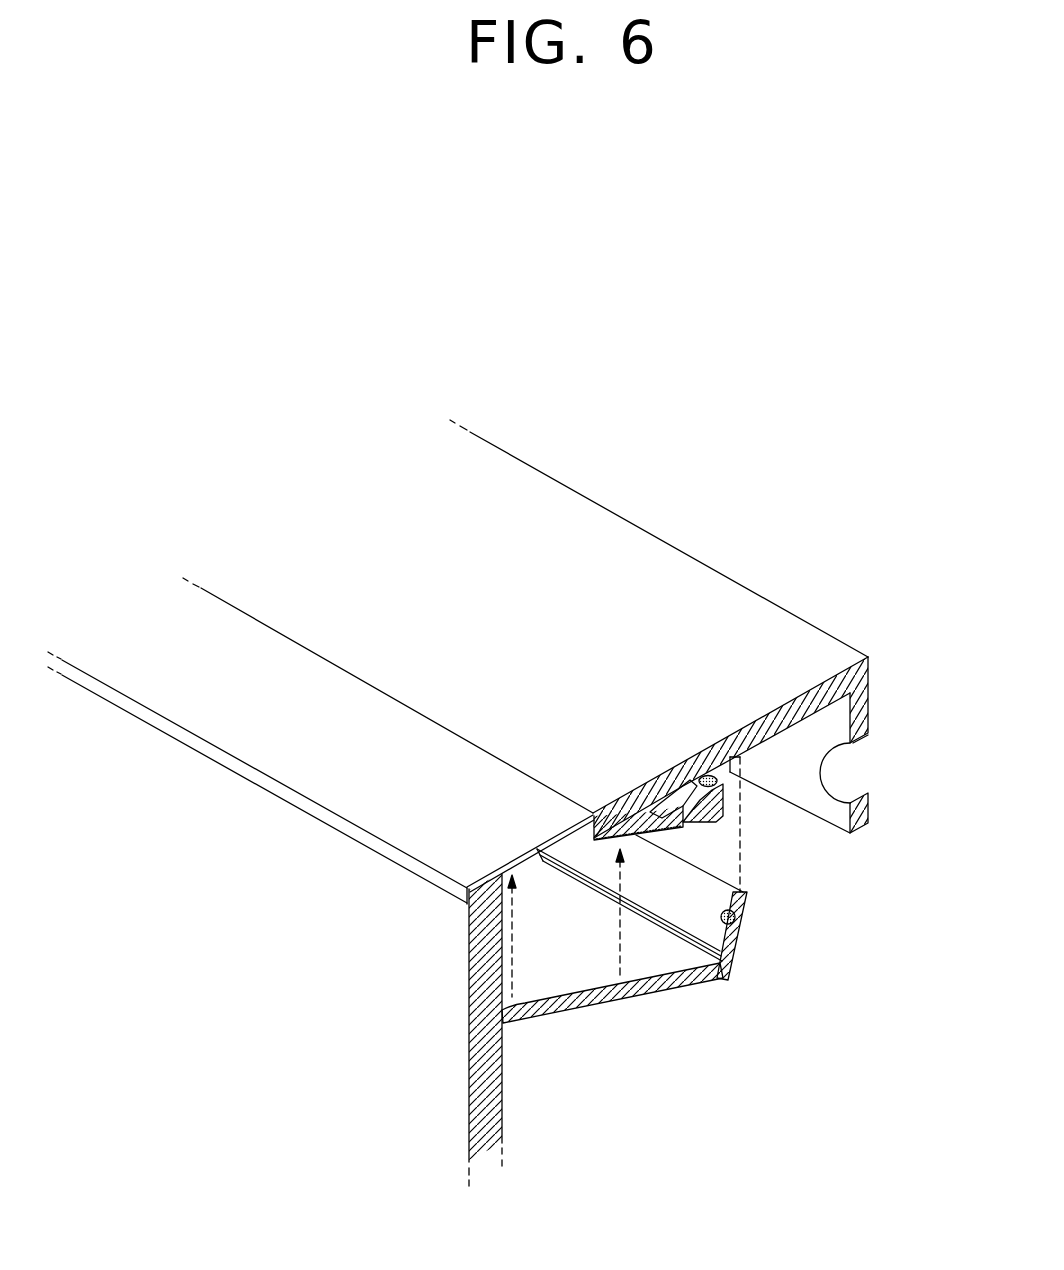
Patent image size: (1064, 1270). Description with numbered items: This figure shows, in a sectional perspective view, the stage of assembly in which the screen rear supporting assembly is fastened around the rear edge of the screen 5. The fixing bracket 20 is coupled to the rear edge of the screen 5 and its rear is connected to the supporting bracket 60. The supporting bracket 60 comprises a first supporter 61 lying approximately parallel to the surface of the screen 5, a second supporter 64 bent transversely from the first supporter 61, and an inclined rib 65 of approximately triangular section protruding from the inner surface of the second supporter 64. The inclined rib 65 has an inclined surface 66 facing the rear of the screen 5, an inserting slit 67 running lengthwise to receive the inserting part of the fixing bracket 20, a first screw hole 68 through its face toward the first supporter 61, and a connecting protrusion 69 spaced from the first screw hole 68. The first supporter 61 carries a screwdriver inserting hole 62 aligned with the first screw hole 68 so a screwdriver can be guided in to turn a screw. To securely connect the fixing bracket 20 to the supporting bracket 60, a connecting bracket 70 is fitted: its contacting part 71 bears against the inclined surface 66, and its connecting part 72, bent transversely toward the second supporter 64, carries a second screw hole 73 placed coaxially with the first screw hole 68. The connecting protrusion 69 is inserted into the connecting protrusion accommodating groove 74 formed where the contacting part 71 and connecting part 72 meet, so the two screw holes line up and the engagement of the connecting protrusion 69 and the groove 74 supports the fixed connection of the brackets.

The screen 5 is at (472, 1040).
The fixing bracket 20 is at (316, 841).
The supporting bracket 60 is at (781, 655).
The first supporter 61 is at (866, 700).
The screwdriver inserting hole 62 is at (848, 767).
The second supporter 64 is at (790, 702).
The inclined rib 65 is at (610, 815).
The inclined surface 66 is at (632, 810).
The inserting slit 67 is at (660, 787).
The first screw hole 68 is at (718, 784).
The connecting protrusion 69 is at (742, 773).
The connecting bracket 70 is at (624, 983).
The contacting part 71 is at (627, 998).
The connecting part 72 is at (697, 979).
The second screw hole 73 is at (737, 918).
The connecting protrusion accommodating groove 74 is at (732, 962).